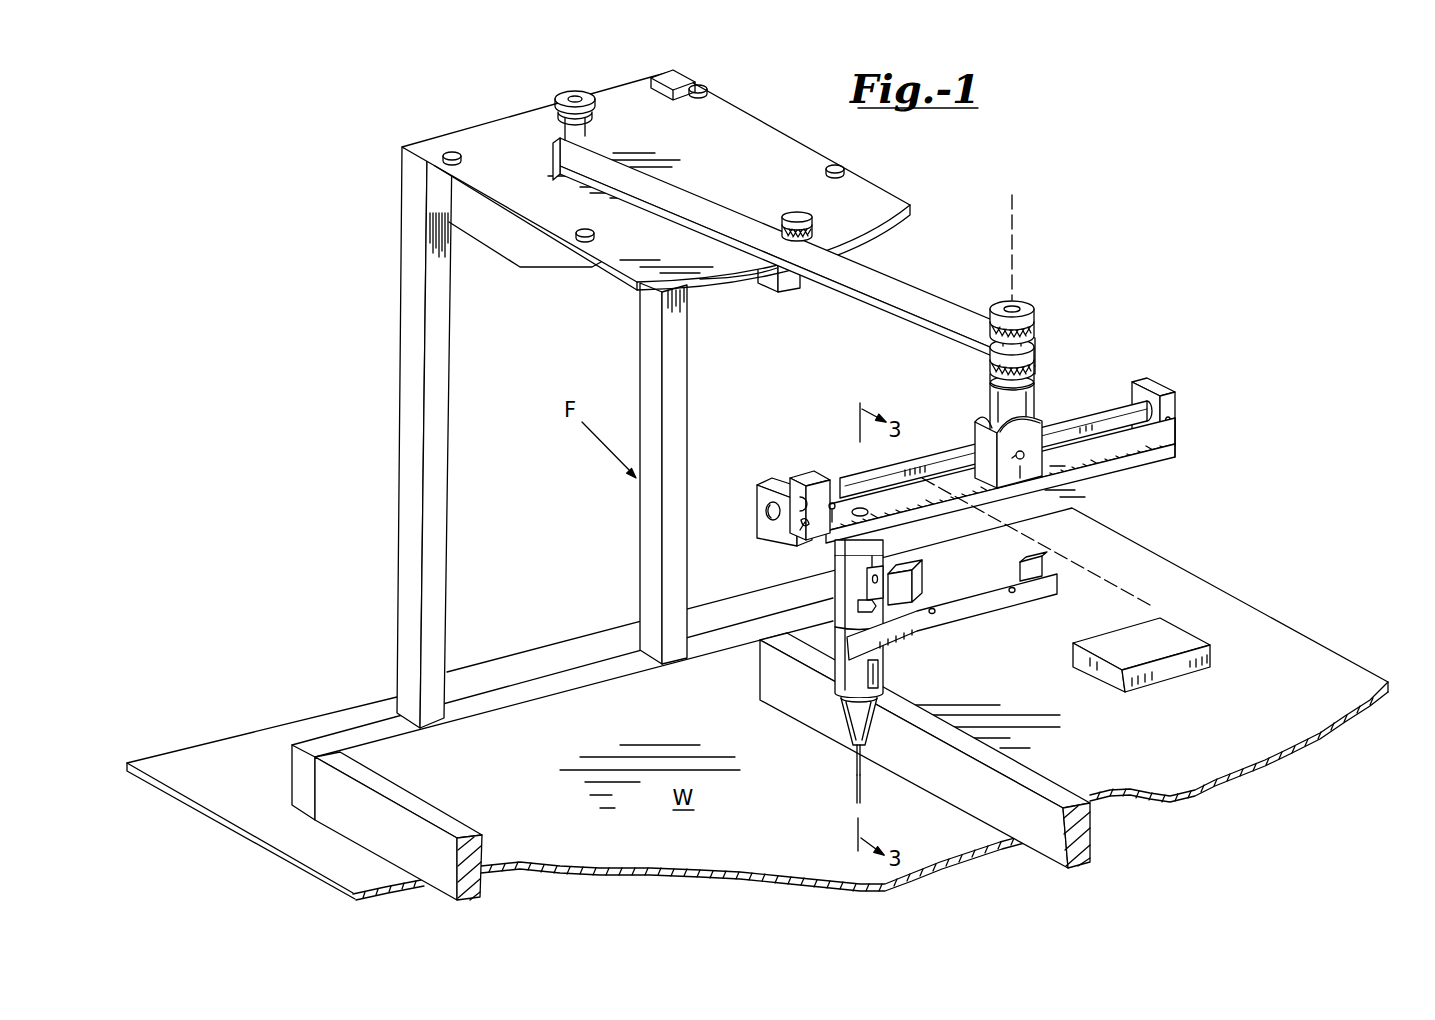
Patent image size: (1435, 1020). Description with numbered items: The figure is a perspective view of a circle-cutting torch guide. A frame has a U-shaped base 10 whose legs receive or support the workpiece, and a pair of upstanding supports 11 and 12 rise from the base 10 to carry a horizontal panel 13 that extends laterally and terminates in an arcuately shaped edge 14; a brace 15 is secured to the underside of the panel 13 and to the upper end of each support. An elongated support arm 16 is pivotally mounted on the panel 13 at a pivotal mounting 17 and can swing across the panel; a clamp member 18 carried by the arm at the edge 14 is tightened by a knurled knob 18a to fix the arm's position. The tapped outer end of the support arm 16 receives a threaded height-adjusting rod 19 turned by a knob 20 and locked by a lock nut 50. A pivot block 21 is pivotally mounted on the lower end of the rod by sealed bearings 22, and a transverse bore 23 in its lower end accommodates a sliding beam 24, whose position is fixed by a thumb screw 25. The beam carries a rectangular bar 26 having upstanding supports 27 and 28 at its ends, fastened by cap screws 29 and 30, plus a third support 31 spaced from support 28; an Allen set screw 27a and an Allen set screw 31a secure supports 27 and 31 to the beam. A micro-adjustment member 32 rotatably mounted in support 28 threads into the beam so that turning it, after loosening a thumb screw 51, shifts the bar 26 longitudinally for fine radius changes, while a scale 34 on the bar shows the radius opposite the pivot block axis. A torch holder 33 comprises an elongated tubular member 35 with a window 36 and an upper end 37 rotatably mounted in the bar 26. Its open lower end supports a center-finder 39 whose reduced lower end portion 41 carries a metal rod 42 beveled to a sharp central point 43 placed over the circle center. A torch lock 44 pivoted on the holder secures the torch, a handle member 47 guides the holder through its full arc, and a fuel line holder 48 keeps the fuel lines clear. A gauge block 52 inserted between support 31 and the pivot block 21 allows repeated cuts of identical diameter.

The U-shaped base 10 is at (445, 808).
The upstanding support 11 is at (400, 390).
The upstanding support 12 is at (642, 393).
The horizontal panel 13 is at (656, 180).
The arcuately shaped edge 14 is at (713, 284).
The brace 15 is at (518, 264).
The support arm 16 is at (908, 276).
The pivotal mounting 17 is at (578, 92).
The clamp member 18 is at (790, 282).
The knurled knob 18a is at (806, 213).
The threaded height-adjusting rod 19 is at (1024, 342).
The knob 20 is at (1032, 303).
The pivot block 21 is at (1047, 411).
The sealed bearings 22 is at (992, 393).
The transverse bore 23 is at (977, 432).
The sliding beam 24 is at (1108, 398).
The thumb screw 25 is at (1040, 458).
The rectangular bar 26 is at (1146, 478).
The upstanding rectangular support 27 is at (1160, 381).
The Allen set screw 27a is at (1173, 416).
The upstanding rectangular support 28 is at (757, 487).
The cap screw 29 is at (1170, 455).
The cap screw 30 is at (806, 552).
The third upstanding support 31 is at (791, 478).
The Allen set screw 31a is at (831, 504).
The micro-adjustment member 32 is at (755, 511).
The torch holder 33 is at (827, 706).
The scale 34 is at (1033, 490).
The elongated member 35 is at (833, 628).
The window 36 is at (866, 608).
The upper end 37 is at (862, 508).
The center-finder 39 is at (882, 660).
The reduced lower end portion 41 is at (879, 715).
The metal rod 42 is at (850, 772).
The central point 43 is at (852, 800).
The torch lock 44 is at (922, 576).
The handle member 47 is at (1000, 608).
The fuel line holder 48 is at (1030, 560).
The lock nut 50 is at (1036, 350).
The thumb screw 51 is at (804, 534).
The gauge block 52 is at (1178, 632).